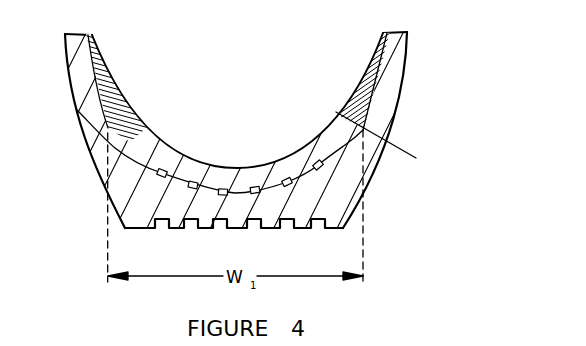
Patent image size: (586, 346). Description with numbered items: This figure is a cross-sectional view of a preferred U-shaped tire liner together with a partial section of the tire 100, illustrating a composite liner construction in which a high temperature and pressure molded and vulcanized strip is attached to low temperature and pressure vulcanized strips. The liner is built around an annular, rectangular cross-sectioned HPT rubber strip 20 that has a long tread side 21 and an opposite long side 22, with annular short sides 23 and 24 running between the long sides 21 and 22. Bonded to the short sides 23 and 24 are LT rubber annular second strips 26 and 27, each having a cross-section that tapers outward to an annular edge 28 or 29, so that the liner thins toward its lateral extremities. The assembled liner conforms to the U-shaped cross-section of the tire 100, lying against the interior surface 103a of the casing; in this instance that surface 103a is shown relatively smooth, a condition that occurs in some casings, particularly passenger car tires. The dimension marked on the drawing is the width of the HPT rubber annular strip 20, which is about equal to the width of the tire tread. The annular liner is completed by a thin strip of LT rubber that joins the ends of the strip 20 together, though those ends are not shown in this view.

The HPT rubber strip 20 is at (163, 94).
The long tread side 21 is at (195, 187).
The opposite long side 22 is at (313, 127).
The short side 23 is at (108, 142).
The short side 24 is at (388, 101).
The LT rubber annular second strip 26 is at (105, 103).
The LT rubber annular second strip 27 is at (362, 92).
The annular edge 28 is at (90, 35).
The annular edge 29 is at (383, 33).
The tire 100 is at (385, 265).
The surface 103a is at (328, 173).